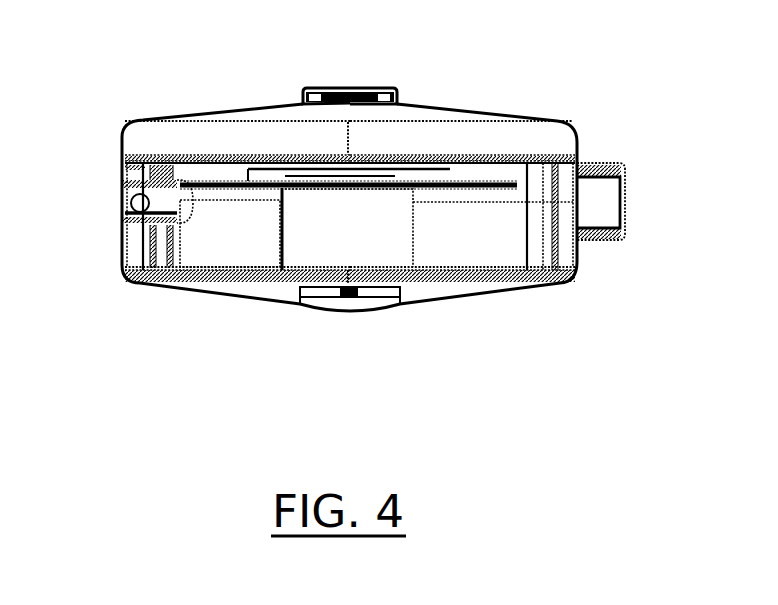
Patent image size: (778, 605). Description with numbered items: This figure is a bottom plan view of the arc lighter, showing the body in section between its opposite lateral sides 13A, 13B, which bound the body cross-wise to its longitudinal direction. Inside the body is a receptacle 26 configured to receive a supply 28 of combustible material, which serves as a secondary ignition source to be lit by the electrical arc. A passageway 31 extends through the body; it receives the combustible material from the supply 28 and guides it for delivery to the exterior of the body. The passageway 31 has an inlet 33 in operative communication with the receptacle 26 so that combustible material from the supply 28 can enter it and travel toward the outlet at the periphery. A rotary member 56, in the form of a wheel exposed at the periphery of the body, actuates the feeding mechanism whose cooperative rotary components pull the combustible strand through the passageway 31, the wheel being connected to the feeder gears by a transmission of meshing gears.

The side of the body 13A is at (120, 248).
The side of the body 13B is at (582, 254).
The receptacle 26 is at (537, 189).
The supply of combustible material 28 is at (226, 182).
The passageway 31 is at (132, 201).
The inlet 33 is at (162, 190).
The rotary member 56 is at (625, 207).